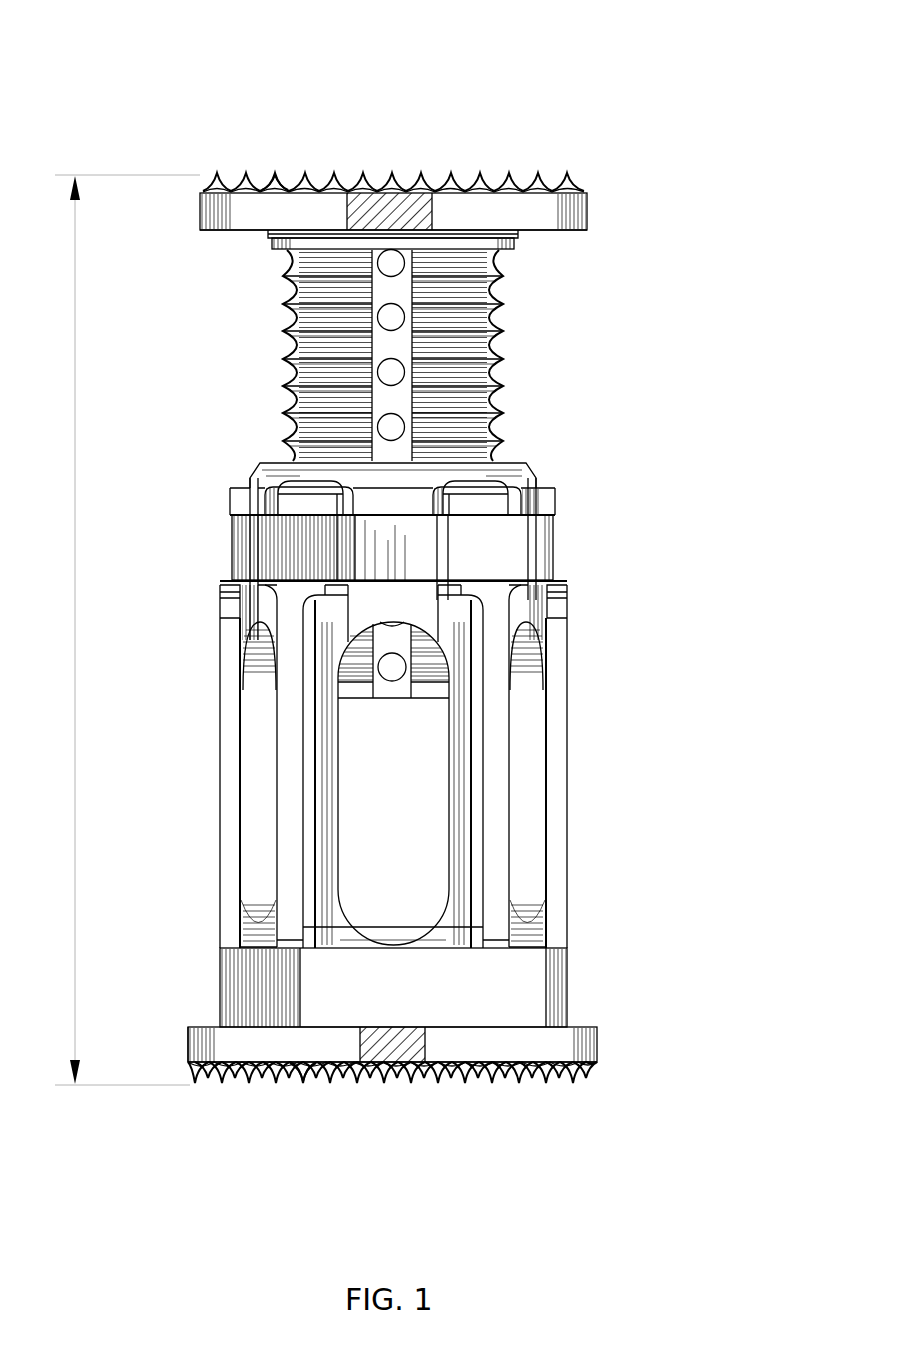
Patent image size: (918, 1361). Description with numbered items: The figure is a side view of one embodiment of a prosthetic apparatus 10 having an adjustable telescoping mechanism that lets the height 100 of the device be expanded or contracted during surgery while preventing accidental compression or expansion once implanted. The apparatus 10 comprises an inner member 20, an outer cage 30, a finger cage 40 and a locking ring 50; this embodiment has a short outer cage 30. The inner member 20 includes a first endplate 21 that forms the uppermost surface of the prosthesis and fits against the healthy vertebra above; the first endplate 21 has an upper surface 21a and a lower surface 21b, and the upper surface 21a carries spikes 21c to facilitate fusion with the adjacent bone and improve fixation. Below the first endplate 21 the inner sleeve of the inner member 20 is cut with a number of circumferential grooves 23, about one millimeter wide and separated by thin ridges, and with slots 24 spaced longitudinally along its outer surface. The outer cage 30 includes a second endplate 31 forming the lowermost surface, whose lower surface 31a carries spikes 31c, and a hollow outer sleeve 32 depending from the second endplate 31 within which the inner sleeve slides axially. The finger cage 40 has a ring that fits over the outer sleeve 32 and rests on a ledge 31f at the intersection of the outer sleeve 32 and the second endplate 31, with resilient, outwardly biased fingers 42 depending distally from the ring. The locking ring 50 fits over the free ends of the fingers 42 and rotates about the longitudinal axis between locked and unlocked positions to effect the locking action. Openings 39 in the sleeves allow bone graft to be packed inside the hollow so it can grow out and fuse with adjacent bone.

The apparatus 10 is at (126, 83).
The inner member 20 is at (250, 378).
The first endplate 21 is at (568, 190).
The upper surface 21a is at (507, 163).
The lower surface 21b is at (552, 233).
The spikes 21c is at (282, 188).
The circumferential grooves 23 is at (526, 366).
The slots 24 is at (372, 287).
The outer cage 30 is at (450, 637).
The second endplate 31 is at (624, 1043).
The lower surface 31a is at (532, 1113).
The spikes 31c is at (310, 1085).
The ledge 31f is at (203, 1025).
The outer sleeve 32 is at (537, 482).
The openings 39 is at (356, 780).
The finger cage 40 is at (500, 698).
The fingers 42 is at (550, 743).
The locking ring 50 is at (547, 550).
The height 100 is at (127, 630).